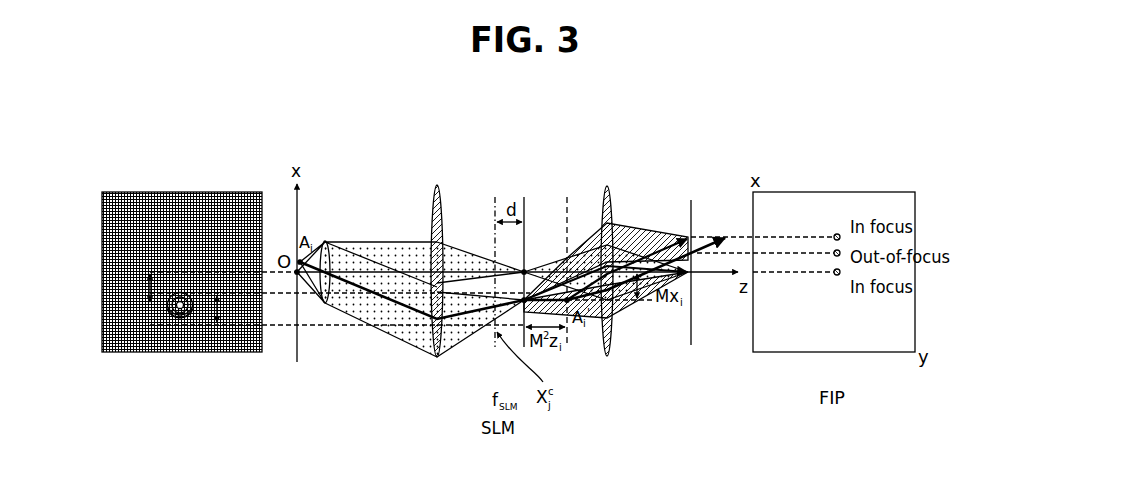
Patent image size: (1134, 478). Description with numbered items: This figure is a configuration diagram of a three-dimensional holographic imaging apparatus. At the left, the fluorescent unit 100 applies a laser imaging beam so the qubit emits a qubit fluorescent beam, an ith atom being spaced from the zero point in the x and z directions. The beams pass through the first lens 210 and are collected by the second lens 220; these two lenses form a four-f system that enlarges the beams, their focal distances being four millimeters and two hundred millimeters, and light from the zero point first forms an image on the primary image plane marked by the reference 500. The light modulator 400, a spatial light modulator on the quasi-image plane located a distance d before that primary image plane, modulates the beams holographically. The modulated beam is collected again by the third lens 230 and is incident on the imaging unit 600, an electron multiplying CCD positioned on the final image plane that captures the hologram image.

The fluorescent unit 100 is at (302, 218).
The first lens 210 is at (326, 240).
The second lens 220 is at (437, 185).
The third lens 230 is at (608, 186).
The light modulator 400 is at (494, 165).
The primary image plane (PIP) 500 is at (525, 165).
The imaging unit 600 is at (692, 165).